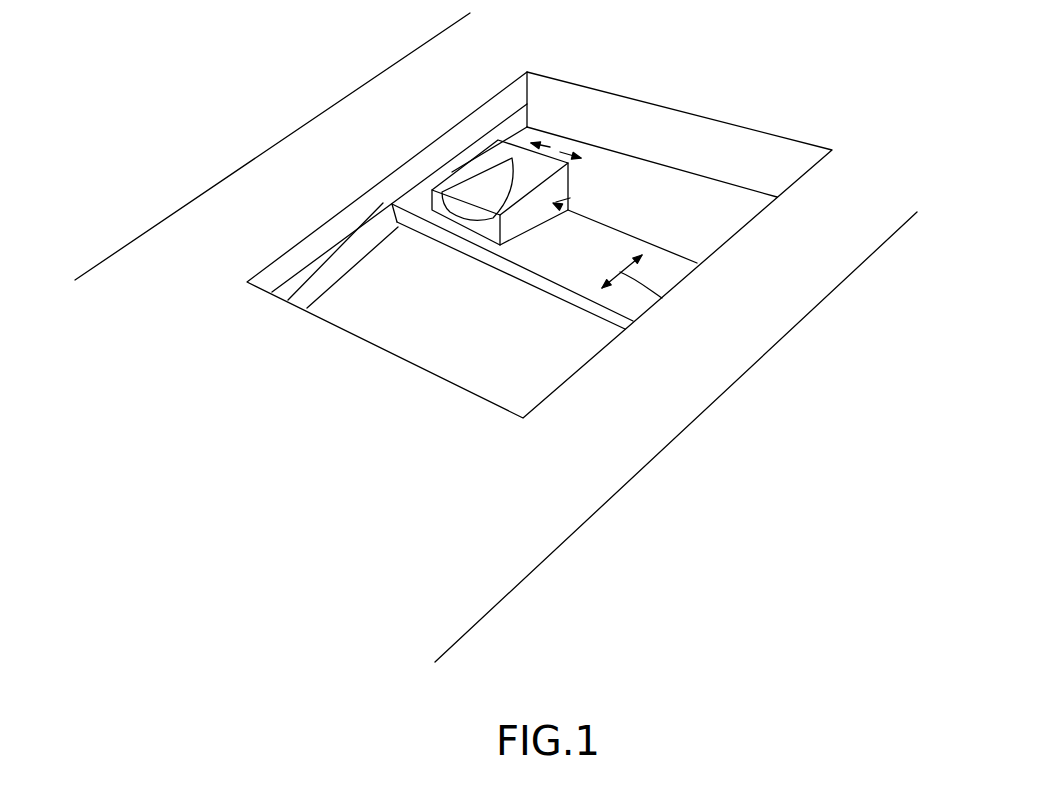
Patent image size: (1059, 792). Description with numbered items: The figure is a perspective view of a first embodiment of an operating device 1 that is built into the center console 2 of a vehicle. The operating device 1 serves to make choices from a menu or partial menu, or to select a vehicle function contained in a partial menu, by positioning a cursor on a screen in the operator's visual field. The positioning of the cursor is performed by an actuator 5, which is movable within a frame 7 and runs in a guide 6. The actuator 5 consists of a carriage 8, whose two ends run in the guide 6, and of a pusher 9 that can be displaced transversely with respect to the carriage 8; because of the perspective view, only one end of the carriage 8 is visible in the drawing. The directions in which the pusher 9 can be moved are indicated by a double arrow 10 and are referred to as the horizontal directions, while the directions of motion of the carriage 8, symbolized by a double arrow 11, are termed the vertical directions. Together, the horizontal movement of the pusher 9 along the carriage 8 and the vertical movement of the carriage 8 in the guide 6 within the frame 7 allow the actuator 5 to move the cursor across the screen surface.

The operating device 1 is at (363, 160).
The center console 2 is at (807, 288).
The actuator 5 is at (570, 198).
The guide 6 is at (323, 260).
The frame 7 is at (503, 98).
The carriage 8 is at (555, 268).
The pusher 9 is at (543, 177).
The double arrow 10 is at (556, 148).
The double arrow 11 is at (662, 298).